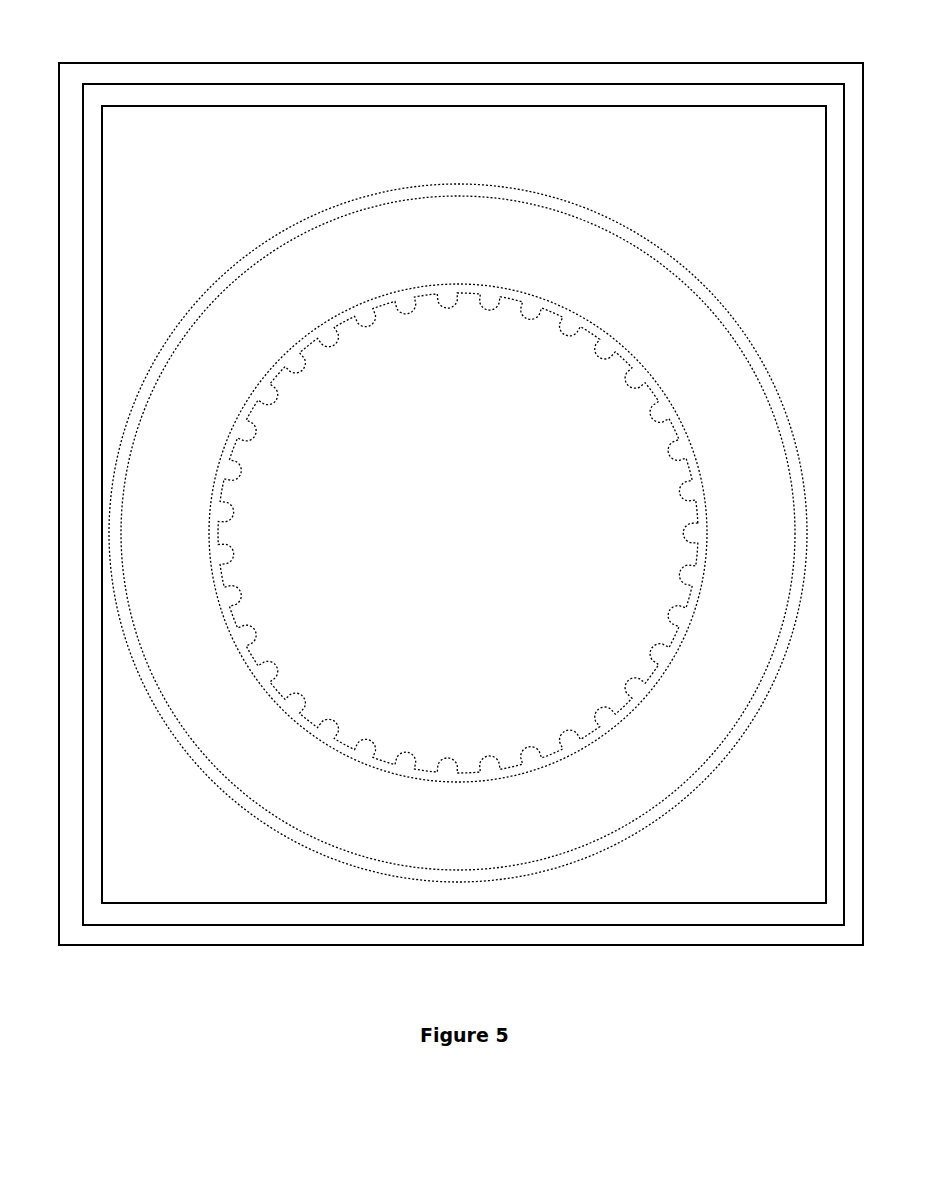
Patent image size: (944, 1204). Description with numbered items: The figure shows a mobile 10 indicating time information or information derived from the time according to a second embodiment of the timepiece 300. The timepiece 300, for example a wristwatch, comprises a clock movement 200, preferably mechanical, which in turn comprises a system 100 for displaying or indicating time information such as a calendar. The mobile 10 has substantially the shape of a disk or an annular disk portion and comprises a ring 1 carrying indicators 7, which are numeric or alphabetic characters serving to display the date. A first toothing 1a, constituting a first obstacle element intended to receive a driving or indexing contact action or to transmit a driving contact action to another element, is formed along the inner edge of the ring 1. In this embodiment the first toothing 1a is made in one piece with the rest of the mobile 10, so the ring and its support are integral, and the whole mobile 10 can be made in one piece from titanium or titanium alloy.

The system for displaying or indicating time information 100 is at (375, 96).
The clock movement 200 is at (425, 75).
The timepiece 300 is at (482, 54).
The mobile 10 is at (458, 506).
The ring 1 is at (443, 215).
The first toothing 1a is at (447, 322).
The indicators 7 is at (741, 414).